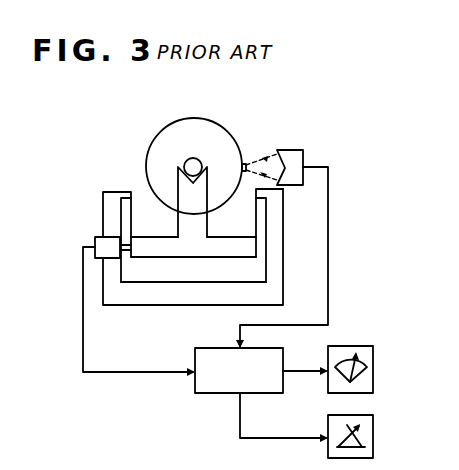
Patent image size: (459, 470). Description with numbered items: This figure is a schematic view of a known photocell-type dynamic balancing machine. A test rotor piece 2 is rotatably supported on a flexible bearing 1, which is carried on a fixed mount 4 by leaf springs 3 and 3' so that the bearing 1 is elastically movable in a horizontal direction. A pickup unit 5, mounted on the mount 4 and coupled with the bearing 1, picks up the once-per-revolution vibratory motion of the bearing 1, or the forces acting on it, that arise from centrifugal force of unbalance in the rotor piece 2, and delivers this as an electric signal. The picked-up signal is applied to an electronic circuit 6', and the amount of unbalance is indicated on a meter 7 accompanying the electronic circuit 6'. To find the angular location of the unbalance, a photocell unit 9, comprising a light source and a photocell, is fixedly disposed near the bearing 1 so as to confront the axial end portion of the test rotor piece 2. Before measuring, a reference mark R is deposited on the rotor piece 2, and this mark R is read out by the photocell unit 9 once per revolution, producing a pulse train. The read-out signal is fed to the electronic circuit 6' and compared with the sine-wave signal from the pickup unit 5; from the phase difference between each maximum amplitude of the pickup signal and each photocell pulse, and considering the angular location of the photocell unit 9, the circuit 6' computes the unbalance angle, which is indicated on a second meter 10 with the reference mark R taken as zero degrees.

The flexible bearing 1 is at (183, 188).
The test rotor piece 2 is at (173, 138).
The reference mark R is at (244, 162).
The leaf spring 3 is at (94, 228).
The leaf spring 3' is at (320, 232).
The fixed mount 4 is at (273, 251).
The pickup unit 5 is at (107, 245).
The electronic circuit 6' is at (246, 315).
The meter 7 is at (373, 353).
The photocell unit 9 is at (295, 150).
The meter 10 is at (373, 423).